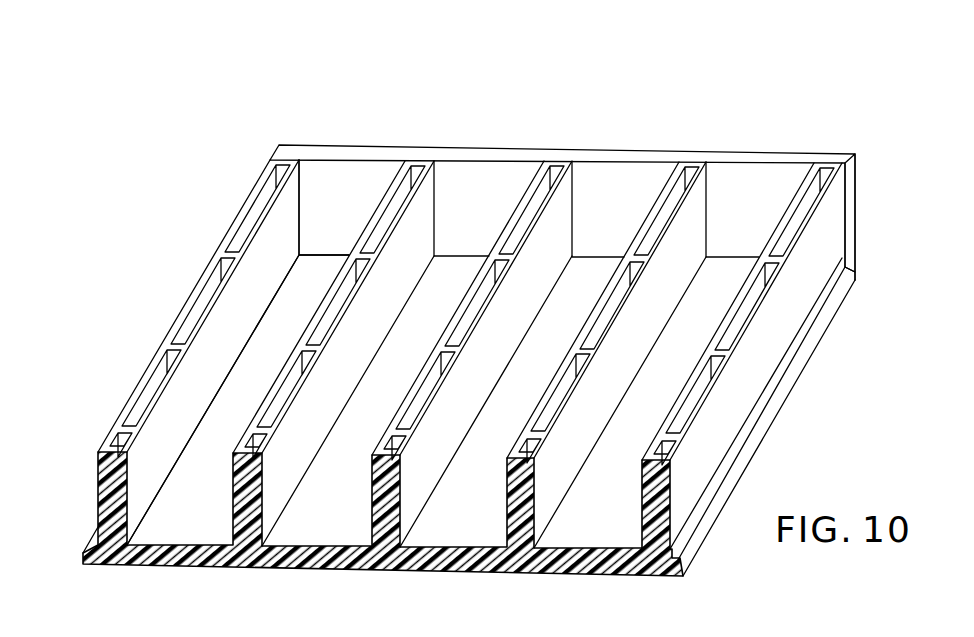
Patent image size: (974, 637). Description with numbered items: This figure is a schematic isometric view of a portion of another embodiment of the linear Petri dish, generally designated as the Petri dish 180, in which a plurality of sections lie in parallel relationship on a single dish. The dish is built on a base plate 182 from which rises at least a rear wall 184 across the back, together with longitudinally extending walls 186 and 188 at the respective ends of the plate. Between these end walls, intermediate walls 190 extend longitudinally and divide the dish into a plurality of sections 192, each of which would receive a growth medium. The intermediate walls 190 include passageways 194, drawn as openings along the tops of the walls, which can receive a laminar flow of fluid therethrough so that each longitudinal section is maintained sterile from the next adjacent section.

The Petri dish 180 is at (624, 126).
The base plate 182 is at (203, 528).
The rear wall 184 is at (750, 151).
The longitudinally extending wall 186 is at (833, 228).
The longitudinally extending wall 188 is at (207, 270).
The intermediate wall 190 is at (423, 197).
The section 192 is at (340, 180).
The passageway 194 is at (543, 188).